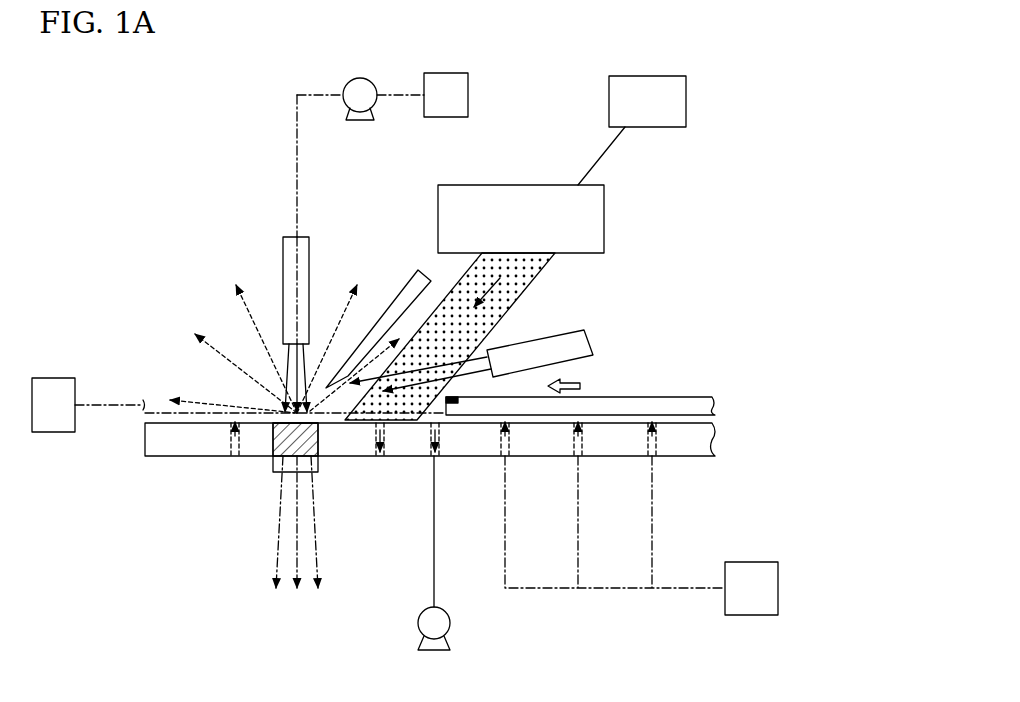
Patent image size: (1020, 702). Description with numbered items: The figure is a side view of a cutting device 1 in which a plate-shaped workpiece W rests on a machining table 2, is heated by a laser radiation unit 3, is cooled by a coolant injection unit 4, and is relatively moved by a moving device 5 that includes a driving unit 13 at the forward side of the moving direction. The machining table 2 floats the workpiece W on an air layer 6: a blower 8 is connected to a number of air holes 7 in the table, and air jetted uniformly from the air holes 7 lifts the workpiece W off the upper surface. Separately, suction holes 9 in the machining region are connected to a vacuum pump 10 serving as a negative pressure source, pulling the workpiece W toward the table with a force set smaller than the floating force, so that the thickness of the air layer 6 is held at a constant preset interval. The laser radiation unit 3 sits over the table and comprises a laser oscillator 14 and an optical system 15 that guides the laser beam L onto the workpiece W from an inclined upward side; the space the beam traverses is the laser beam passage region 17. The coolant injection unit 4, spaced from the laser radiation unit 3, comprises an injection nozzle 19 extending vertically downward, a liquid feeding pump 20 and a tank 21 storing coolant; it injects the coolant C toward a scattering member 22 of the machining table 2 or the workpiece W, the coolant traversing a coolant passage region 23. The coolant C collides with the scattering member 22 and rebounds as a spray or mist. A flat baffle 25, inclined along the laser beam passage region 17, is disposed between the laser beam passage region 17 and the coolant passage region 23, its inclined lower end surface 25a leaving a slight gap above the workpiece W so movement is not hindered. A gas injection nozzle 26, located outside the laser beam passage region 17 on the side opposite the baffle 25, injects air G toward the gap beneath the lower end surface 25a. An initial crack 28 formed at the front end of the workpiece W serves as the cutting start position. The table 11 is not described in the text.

The cutting device 1 is at (141, 216).
The machining table 2 is at (152, 459).
The laser radiation unit 3 is at (745, 82).
The coolant injection unit 4 is at (272, 117).
The moving device 5 is at (52, 360).
The air layer 6 is at (706, 414).
The air holes 7 is at (243, 445).
The blower 8 is at (748, 603).
The suction holes 9 is at (387, 445).
The vacuum pump 10 is at (441, 623).
The table 11 is at (198, 445).
The driving unit 13 is at (51, 418).
The laser oscillator 14 is at (668, 100).
The optical system 15 is at (590, 206).
The laser beam passage region 17 is at (520, 295).
The injection nozzle 19 is at (284, 240).
The liquid feeding pump 20 is at (359, 82).
The tank 21 is at (447, 80).
The scattering member 22 is at (317, 440).
The coolant passage region 23 is at (292, 370).
The baffle 25 is at (396, 300).
The lower end surface 25a is at (337, 383).
The gas injection nozzle 26 is at (590, 340).
The initial crack 28 is at (459, 404).
The coolant C is at (305, 372).
The air (gas) G is at (480, 357).
The laser beam L is at (540, 280).
The workpiece W is at (683, 397).